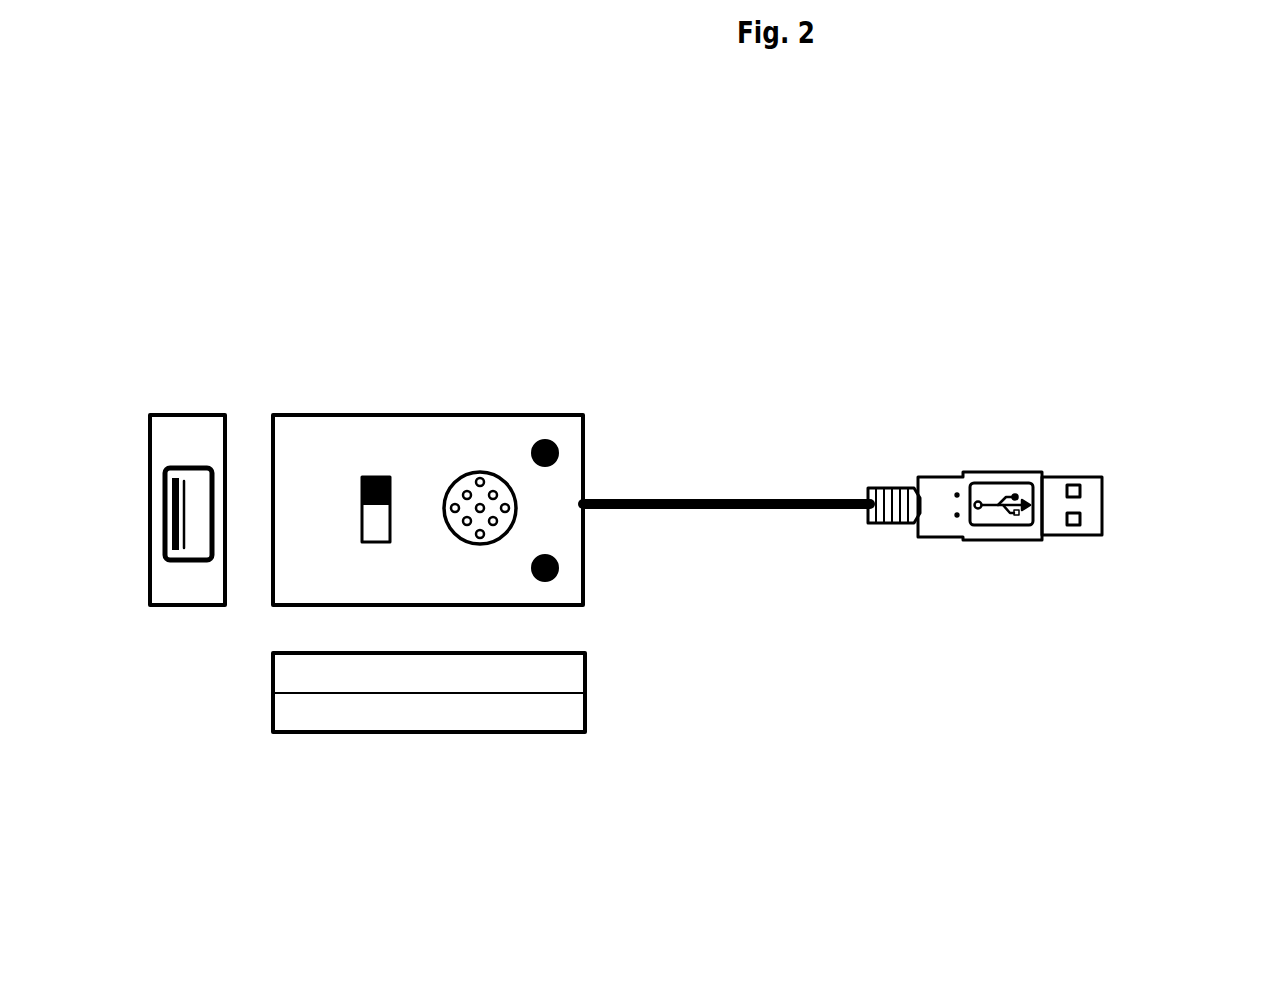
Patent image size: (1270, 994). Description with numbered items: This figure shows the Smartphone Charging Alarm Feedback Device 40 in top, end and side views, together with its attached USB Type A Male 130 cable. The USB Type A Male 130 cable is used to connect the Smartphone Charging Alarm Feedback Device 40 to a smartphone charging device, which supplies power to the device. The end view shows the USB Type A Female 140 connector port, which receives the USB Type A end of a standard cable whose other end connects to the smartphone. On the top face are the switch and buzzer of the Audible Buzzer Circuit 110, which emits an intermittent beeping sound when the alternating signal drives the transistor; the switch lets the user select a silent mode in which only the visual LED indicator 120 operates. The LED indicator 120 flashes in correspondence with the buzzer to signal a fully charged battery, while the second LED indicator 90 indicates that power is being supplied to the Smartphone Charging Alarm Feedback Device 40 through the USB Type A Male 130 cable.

The Smartphone Charging Alarm Feedback Device 40 is at (487, 428).
The LED indicator 90 is at (558, 568).
The Audible Buzzer Circuit 110 is at (375, 477).
The LED indicator 120 is at (548, 440).
The USB Type A Male cable 130 is at (946, 477).
The USB Type A Female connector port 140 is at (190, 470).